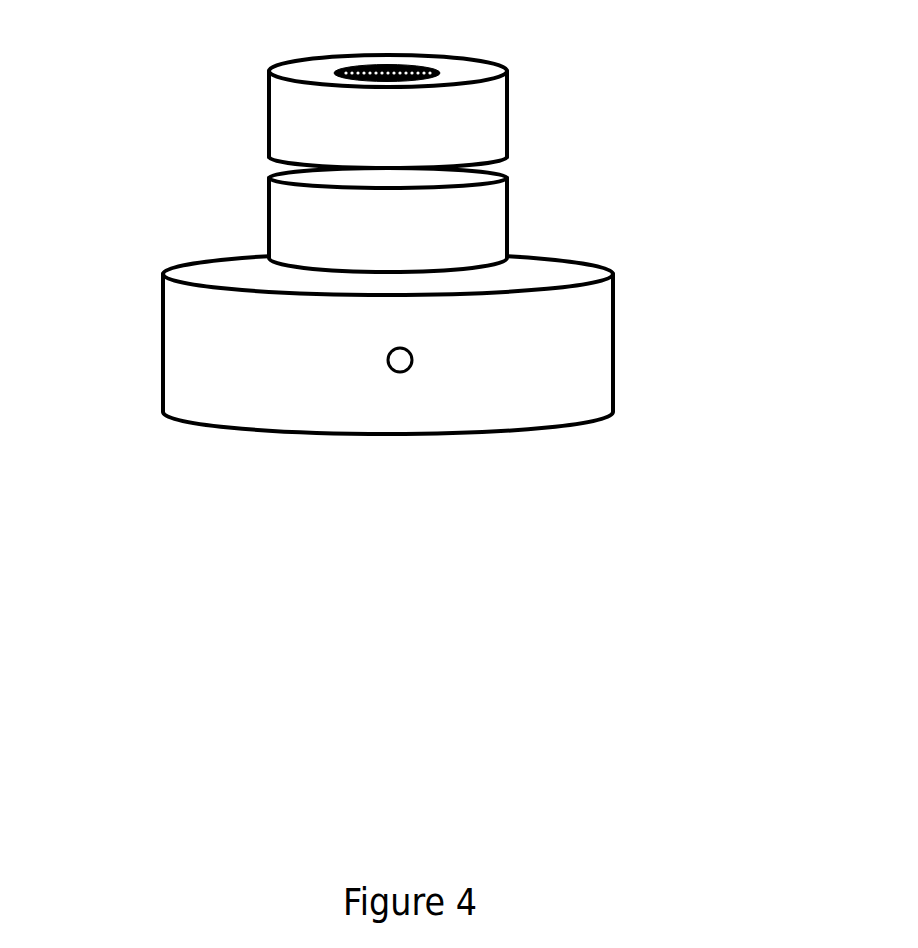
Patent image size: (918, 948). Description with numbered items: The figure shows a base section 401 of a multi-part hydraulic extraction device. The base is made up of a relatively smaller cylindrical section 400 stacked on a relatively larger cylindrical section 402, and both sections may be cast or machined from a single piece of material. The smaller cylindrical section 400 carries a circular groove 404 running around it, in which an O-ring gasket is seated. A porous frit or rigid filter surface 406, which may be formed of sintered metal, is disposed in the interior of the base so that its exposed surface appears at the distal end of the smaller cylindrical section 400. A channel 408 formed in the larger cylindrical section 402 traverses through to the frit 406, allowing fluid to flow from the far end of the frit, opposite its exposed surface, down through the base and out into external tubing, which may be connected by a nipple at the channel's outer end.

The smaller cylindrical section 400 is at (398, 144).
The base section 401 is at (388, 411).
The larger cylindrical section 402 is at (475, 411).
The circular groove 404 is at (256, 167).
The porous frit 406 is at (322, 66).
The channel 408 is at (374, 374).